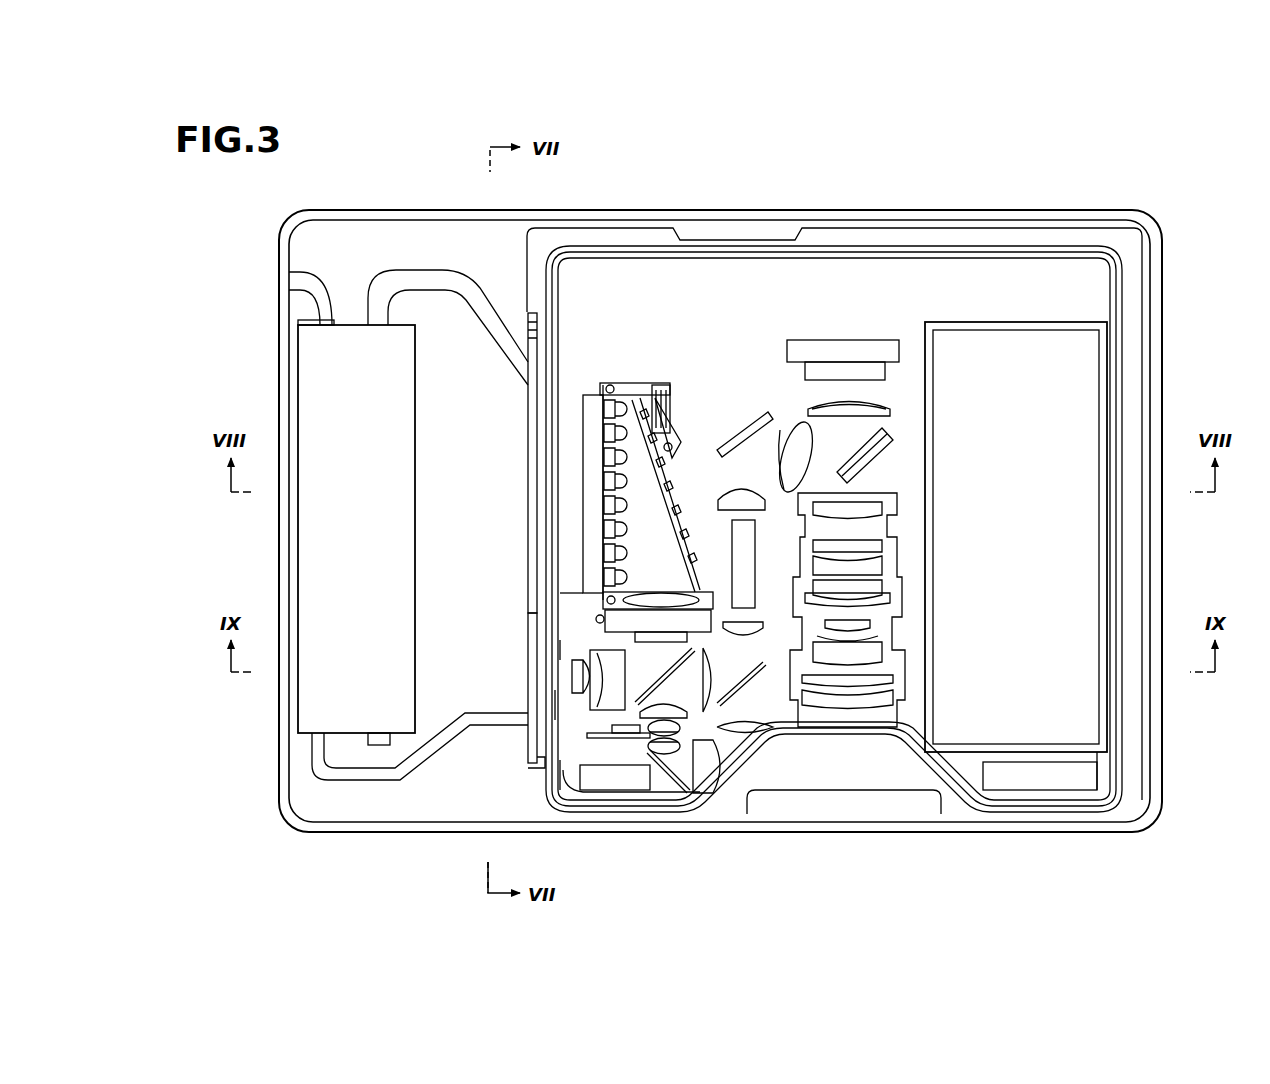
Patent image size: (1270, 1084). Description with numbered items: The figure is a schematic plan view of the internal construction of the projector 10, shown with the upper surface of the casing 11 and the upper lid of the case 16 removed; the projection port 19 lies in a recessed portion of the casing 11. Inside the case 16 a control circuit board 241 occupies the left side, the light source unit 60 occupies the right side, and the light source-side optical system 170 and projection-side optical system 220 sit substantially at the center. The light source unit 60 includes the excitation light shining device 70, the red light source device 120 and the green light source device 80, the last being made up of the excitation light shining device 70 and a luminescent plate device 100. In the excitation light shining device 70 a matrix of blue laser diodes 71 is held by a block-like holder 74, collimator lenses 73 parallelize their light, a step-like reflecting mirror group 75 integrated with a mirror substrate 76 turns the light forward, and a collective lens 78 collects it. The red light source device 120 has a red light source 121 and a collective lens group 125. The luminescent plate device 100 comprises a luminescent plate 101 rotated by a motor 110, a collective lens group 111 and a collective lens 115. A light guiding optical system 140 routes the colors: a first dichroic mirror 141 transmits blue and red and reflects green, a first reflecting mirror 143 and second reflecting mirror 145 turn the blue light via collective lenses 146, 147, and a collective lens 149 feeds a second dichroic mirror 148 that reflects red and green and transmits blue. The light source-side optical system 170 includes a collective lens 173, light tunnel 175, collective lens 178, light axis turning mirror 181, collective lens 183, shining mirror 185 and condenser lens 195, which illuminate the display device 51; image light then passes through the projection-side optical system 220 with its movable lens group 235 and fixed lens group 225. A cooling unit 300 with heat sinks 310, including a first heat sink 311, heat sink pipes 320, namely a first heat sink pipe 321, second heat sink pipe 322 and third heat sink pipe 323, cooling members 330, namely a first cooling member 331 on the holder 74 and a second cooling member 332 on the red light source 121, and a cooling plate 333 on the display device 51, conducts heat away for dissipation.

The projector 10 is at (749, 481).
The casing 11 is at (1145, 352).
The case 16 is at (1135, 405).
The projection port 19 is at (930, 780).
The display device 51 is at (888, 403).
The light source unit 60 is at (575, 760).
The excitation light shining device 70 is at (562, 368).
The blue laser diodes 71 is at (590, 462).
The collimator lenses 73 is at (600, 434).
The holder 74 is at (590, 540).
The reflecting mirror group 75 is at (608, 510).
The mirror substrate 76 is at (656, 395).
The collective lens 78 is at (648, 598).
The green light source device 80 is at (569, 511).
The luminescent plate device 100 is at (622, 785).
The luminescent plate 101 is at (578, 792).
The motor 110 is at (620, 740).
The collective lens group 111 is at (712, 770).
The collective lens 115 is at (672, 770).
The red light source device 120 is at (572, 703).
The red light source 121 is at (563, 700).
The collective lens group 125 is at (570, 662).
The light guiding optical system 140 is at (748, 725).
The first dichroic mirror 141 is at (658, 690).
The first reflecting mirror 143 is at (668, 756).
The second reflecting mirror 145 is at (752, 738).
The collective lens 146 is at (688, 720).
The collective lens 147 is at (780, 735).
The second dichroic mirror 148 is at (880, 690).
The collective lens 149 is at (880, 675).
The light source-side optical system 170 is at (862, 444).
The collective lens 173 is at (880, 640).
The light tunnel 175 is at (880, 548).
The collective lens 178 is at (880, 512).
The light axis turning mirror 181 is at (745, 400).
The collective lens 183 is at (792, 420).
The shining mirror 185 is at (897, 452).
The condenser lens 195 is at (870, 418).
The projection-side optical system 220 is at (910, 688).
The fixed lens group 225 is at (890, 712).
The movable lens group 235 is at (885, 603).
The control circuit board 241 is at (1085, 546).
The cooling unit 300 is at (349, 513).
The heat sinks 310 is at (292, 532).
The first heat sink 311 is at (328, 456).
The heat sink pipes 320 is at (366, 513).
The first heat sink pipe 321 is at (428, 285).
The second heat sink pipe 322 is at (343, 770).
The third heat sink pipe 323 is at (330, 290).
The cooling members 330 is at (495, 540).
The first cooling member 331 is at (565, 418).
The second cooling member 332 is at (563, 680).
The cooling plate 333 is at (888, 345).